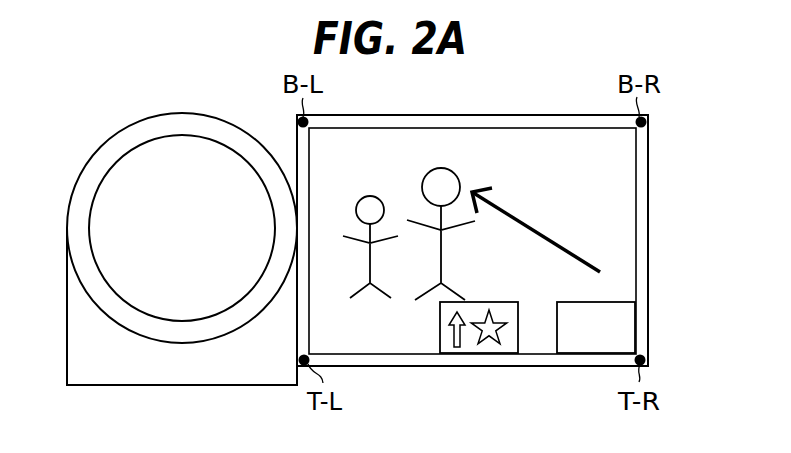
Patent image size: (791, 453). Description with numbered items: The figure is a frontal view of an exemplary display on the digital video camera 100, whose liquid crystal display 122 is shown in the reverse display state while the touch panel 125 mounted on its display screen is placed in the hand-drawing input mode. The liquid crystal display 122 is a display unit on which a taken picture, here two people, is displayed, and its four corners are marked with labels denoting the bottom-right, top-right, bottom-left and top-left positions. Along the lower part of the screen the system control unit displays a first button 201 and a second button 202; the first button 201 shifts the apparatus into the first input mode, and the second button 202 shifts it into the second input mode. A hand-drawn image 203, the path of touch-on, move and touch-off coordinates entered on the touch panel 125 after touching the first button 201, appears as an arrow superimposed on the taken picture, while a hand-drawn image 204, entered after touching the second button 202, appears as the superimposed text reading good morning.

The digital video camera 100 is at (113, 111).
The liquid crystal display 122 is at (648, 158).
The touch panel 125 is at (613, 213).
The first button 201 is at (489, 347).
The second button 202 is at (600, 348).
The hand-drawn image 203 is at (532, 230).
The hand-drawn image 204 is at (396, 342).